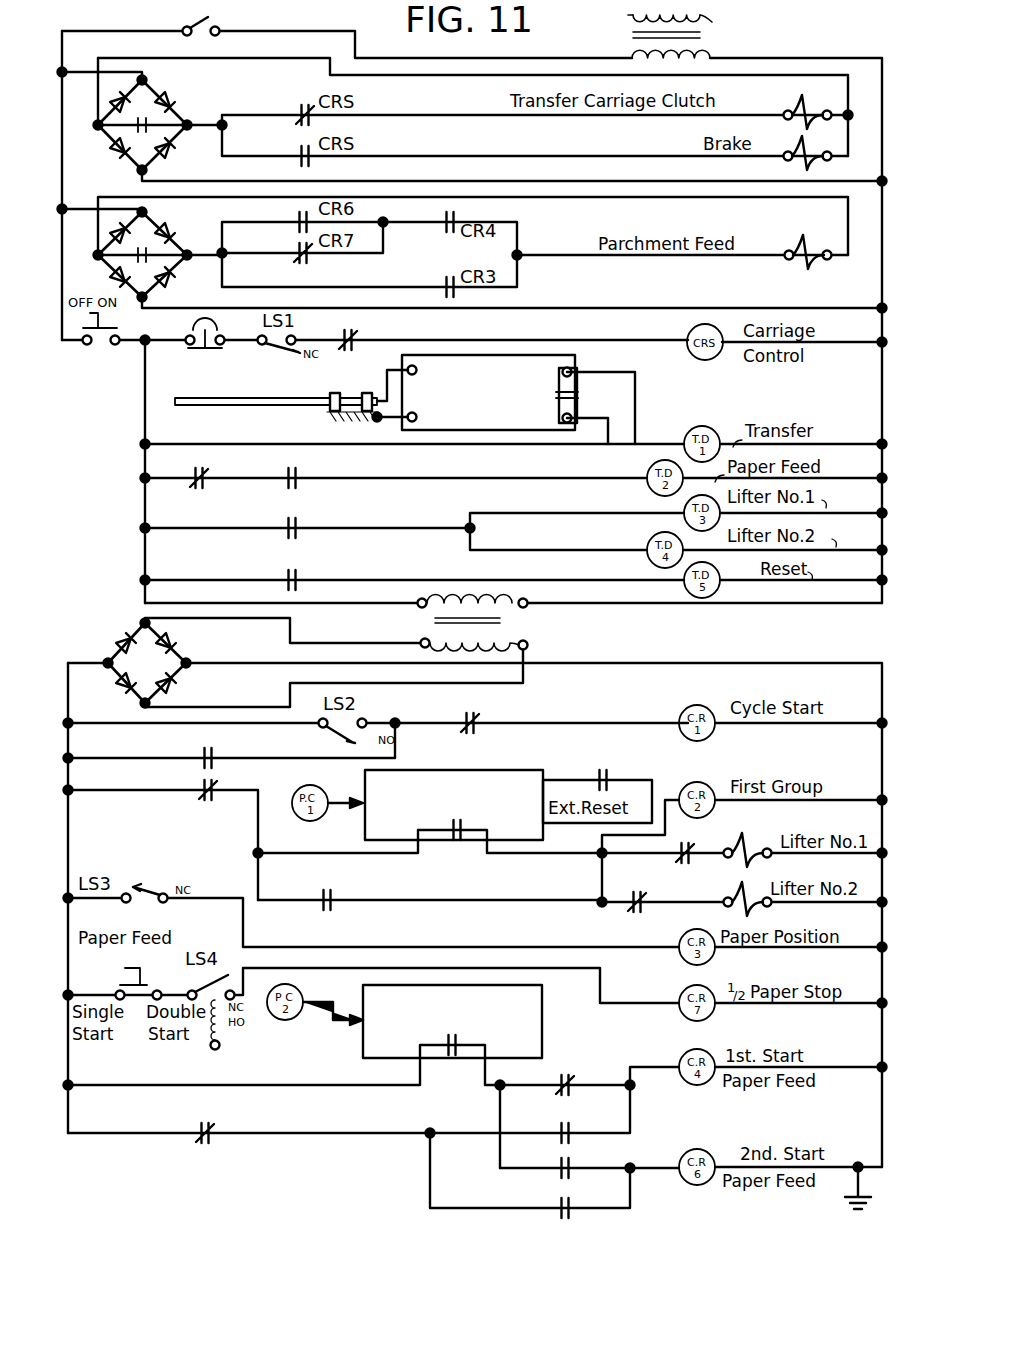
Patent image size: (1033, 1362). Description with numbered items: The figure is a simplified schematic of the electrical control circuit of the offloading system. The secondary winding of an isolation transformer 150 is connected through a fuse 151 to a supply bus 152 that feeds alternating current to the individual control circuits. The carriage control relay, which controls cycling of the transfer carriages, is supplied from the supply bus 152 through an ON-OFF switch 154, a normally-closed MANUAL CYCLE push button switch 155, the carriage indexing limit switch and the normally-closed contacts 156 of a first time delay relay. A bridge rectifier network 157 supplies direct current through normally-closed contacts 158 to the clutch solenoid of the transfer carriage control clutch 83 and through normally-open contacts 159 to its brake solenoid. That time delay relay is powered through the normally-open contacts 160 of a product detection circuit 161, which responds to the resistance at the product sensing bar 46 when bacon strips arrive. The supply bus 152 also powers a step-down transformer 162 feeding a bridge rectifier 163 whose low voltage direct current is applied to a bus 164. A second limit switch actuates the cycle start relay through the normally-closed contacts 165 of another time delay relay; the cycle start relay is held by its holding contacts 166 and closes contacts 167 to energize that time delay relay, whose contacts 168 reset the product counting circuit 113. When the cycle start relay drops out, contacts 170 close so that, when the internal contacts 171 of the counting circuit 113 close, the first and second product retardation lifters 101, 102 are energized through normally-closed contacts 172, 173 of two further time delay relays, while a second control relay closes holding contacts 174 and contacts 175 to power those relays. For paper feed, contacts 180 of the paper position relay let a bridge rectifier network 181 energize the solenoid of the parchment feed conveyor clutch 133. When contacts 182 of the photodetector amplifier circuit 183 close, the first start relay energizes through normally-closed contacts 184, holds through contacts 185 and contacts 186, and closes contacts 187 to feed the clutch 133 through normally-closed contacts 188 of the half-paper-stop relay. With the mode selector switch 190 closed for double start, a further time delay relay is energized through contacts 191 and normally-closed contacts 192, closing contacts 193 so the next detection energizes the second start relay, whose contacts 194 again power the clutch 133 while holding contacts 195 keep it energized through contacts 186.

The fuse 151 is at (182, 25).
The isolation transformer 150 is at (705, 18).
The bridge rectifier network 157 is at (172, 110).
The supply bus 152 is at (62, 167).
The normally-closed contacts of relay CRS 158 is at (296, 110).
The normally-open contacts of relay CRS 159 is at (298, 152).
The transfer carriage control clutch 83 is at (812, 128).
The bridge rectifier network 181 is at (168, 222).
The contacts of relay CR6 194 is at (298, 230).
The normally-closed contacts of relay CR7 188 is at (296, 262).
The contacts of relay CR4 187 is at (442, 230).
The contacts of relay CR3 180 is at (442, 280).
The parchment feed conveyor clutch 133 is at (815, 262).
The ON-OFF switch 154 is at (100, 346).
The MANUAL CYCLE push button switch 155 is at (205, 350).
The normally-closed contacts of time delay relay TD1 156 is at (342, 348).
The product sensing bar 46 is at (225, 396).
The product detection circuit 161 is at (580, 366).
The normally-open contacts of product detection circuit 160 is at (578, 398).
The normally-closed contacts of relay CR3 192 is at (199, 490).
The contacts of relay CR4 191 is at (297, 486).
The contacts of relay CR2 175 is at (298, 536).
The contacts of relay CR1 167 is at (286, 574).
The step-down transformer 162 is at (505, 631).
The bridge rectifier 163 is at (180, 675).
The holding contacts of relay CR1 166 is at (212, 755).
The normally-closed contacts of time delay relay TD5 165 is at (462, 712).
The product counting circuit 113 is at (445, 768).
The contacts of time delay relay TD5 168 is at (608, 774).
The contacts of relay CR1 170 is at (210, 802).
The bus 164 is at (68, 805).
The internal contacts of product counting circuit 171 is at (462, 836).
The normally-closed contacts of time delay relay TD3 172 is at (690, 846).
The first product retardation lifter 101 is at (755, 830).
The holding contacts of relay CR2 174 is at (320, 893).
The normally-closed contacts of time delay relay TD4 173 is at (645, 925).
The second product retardation lifter 102 is at (745, 890).
The mode selector switch 190 is at (120, 978).
The photodetector amplifier circuit 183 is at (544, 1015).
The contacts of photodetector amplifier circuit 182 is at (457, 1058).
The normally-closed contacts of time delay relay TD2 184 is at (558, 1090).
The holding contacts of relay CR4 185 is at (558, 1140).
The normally-closed contacts of relay CR3 186 is at (198, 1145).
The contacts of time delay relay TD2 193 is at (558, 1180).
The holding contacts of relay CR6 195 is at (558, 1215).